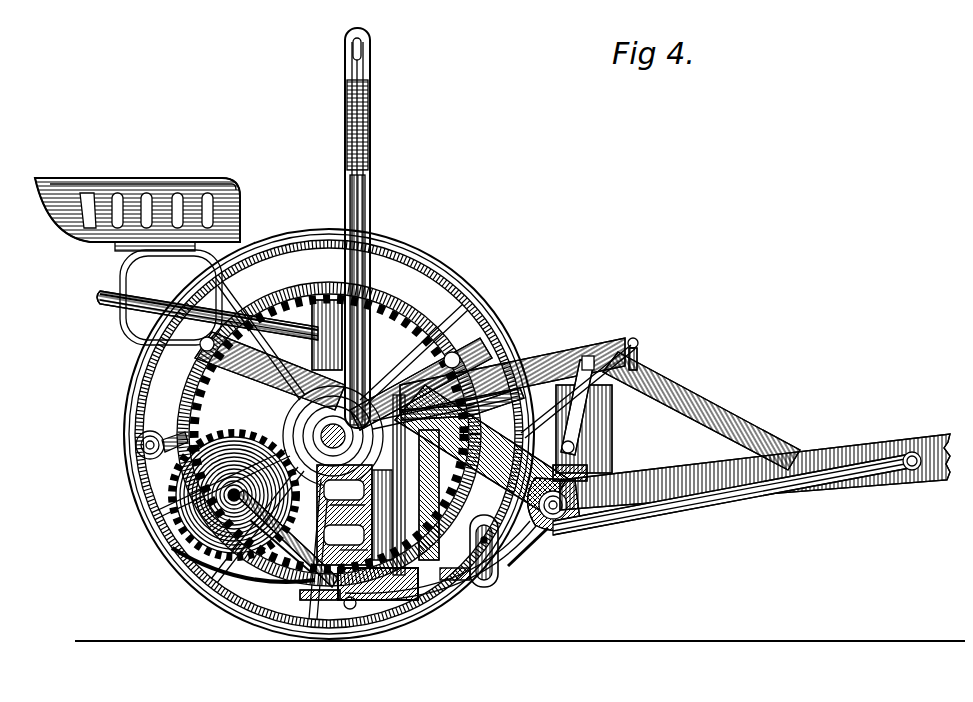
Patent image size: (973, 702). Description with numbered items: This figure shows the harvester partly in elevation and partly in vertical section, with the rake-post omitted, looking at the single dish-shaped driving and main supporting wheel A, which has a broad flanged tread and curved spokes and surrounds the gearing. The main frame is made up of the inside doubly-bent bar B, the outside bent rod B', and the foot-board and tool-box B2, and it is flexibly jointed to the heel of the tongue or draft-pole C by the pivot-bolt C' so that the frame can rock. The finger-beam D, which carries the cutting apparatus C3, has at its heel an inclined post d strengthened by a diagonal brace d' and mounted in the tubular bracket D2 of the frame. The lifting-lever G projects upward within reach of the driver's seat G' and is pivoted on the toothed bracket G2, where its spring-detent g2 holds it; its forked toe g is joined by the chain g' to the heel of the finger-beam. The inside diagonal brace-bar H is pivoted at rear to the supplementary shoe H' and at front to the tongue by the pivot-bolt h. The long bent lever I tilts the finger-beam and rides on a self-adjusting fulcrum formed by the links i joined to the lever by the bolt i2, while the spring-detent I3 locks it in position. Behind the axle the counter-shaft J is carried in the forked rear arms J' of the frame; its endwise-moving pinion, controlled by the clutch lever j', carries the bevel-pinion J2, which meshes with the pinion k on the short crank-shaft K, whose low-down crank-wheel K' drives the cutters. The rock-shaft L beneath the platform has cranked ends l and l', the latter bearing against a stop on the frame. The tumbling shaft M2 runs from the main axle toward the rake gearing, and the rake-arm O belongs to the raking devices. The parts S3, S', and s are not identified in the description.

The driving and main supporting wheel A is at (329, 434).
The driver's seat G' is at (137, 253).
The lifting-lever G is at (366, 228).
The spring-detent g2 is at (370, 210).
The toothed bracket G2 is at (300, 368).
The long bent lever I is at (100, 297).
The spring-detent I3 is at (152, 310).
The tumbling shaft M2 is at (312, 394).
The toe g is at (421, 384).
The chain g' is at (462, 399).
The crank-shaft K is at (324, 443).
The counter-shaft J is at (314, 434).
The bevel-pinion J2 is at (234, 495).
The shifting-clutch lever j' is at (162, 430).
The crank-arm l is at (284, 538).
The forked rear arms of main frame J' is at (243, 570).
The crank-arm l' is at (281, 556).
The rake-arm O is at (344, 515).
The diagonal brace d' is at (366, 515).
The sleeve-bearing or tubular bracket D2 is at (345, 507).
The post d is at (354, 542).
The finger-beam D is at (400, 590).
The crank-wheel K' is at (385, 602).
The rock-shaft L is at (352, 610).
The pinion k is at (475, 551).
The cutting apparatus C3 is at (440, 570).
The supplementary shoe H' is at (544, 553).
The angle-plate or doubly-bent bar B is at (481, 450).
The pivot-bolt C' is at (566, 504).
The tongue or draft-pole C is at (755, 468).
The diagonal brace-bar H is at (731, 494).
The pivot-bolt h is at (912, 472).
The foot-board and tool-box B2 is at (678, 412).
The outside bent rod or main-frame bar B' is at (596, 466).
The links i is at (577, 407).
The rod S3 is at (548, 398).
The bolt i2 is at (590, 358).
The pivot S' is at (633, 327).
The post s is at (640, 352).